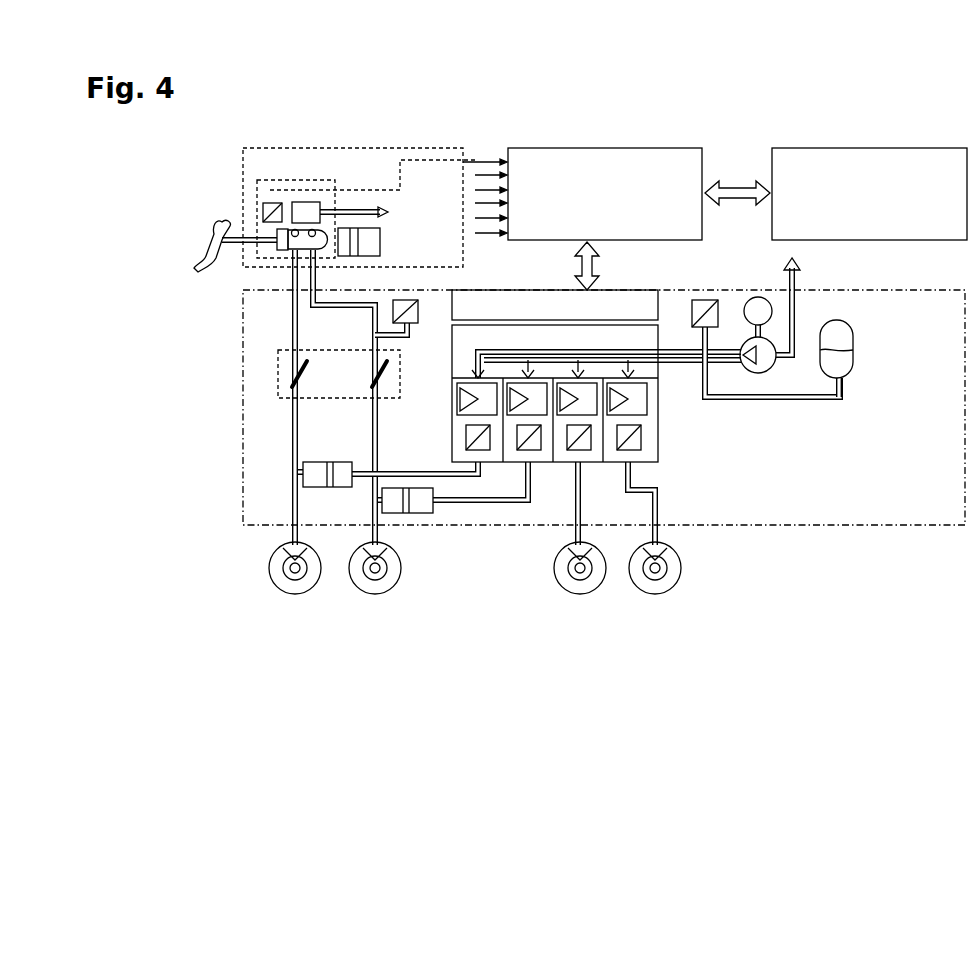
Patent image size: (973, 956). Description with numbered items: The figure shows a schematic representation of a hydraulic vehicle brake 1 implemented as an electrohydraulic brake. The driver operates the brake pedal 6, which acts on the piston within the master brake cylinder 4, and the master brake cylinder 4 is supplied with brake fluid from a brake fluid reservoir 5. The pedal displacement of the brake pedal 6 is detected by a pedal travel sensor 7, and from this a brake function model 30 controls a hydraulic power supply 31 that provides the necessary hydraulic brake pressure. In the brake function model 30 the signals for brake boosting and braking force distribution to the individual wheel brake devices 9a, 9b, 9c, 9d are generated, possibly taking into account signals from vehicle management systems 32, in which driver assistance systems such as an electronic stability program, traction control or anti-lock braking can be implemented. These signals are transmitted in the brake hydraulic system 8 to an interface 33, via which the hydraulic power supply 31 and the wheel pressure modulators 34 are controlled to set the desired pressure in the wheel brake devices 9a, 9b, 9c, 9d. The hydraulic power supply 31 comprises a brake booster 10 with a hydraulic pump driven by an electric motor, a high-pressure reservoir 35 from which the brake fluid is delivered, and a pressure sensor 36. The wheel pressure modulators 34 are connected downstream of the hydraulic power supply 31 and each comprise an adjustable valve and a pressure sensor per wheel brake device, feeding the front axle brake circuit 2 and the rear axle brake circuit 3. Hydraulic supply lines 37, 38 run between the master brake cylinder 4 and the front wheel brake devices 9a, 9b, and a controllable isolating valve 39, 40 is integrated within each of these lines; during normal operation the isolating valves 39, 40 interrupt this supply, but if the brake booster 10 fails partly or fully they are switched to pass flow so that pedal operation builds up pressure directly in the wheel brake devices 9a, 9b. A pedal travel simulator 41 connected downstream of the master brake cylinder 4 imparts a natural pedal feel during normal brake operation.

The hydraulic vehicle brake 1 is at (738, 118).
The front axle brake circuit 2 is at (485, 510).
The rear axle brake circuit 3 is at (672, 500).
The master brake cylinder 4 is at (292, 250).
The brake fluid reservoir 5 is at (308, 202).
The brake pedal 6 is at (200, 264).
The pedal travel sensor 7 is at (263, 208).
The brake hydraulic system 8 is at (858, 527).
The wheel brake device 9a is at (295, 595).
The wheel brake device 9b is at (375, 595).
The wheel brake device 9c is at (580, 595).
The wheel brake device 9d is at (655, 595).
The brake booster 10 is at (755, 288).
The brake function model 30 is at (608, 148).
The hydraulic power supply 31 is at (806, 412).
The vehicle management systems 32 is at (872, 148).
The interface 33 is at (640, 292).
The wheel pressure modulators 34 is at (668, 428).
The high-pressure reservoir 35 is at (856, 376).
The pressure sensor 36 is at (706, 300).
The hydraulic supply line 37 is at (292, 438).
The hydraulic supply line 38 is at (372, 425).
The isolating valve 39 is at (299, 365).
The isolating valve 40 is at (375, 375).
The pedal travel simulator 41 is at (382, 243).